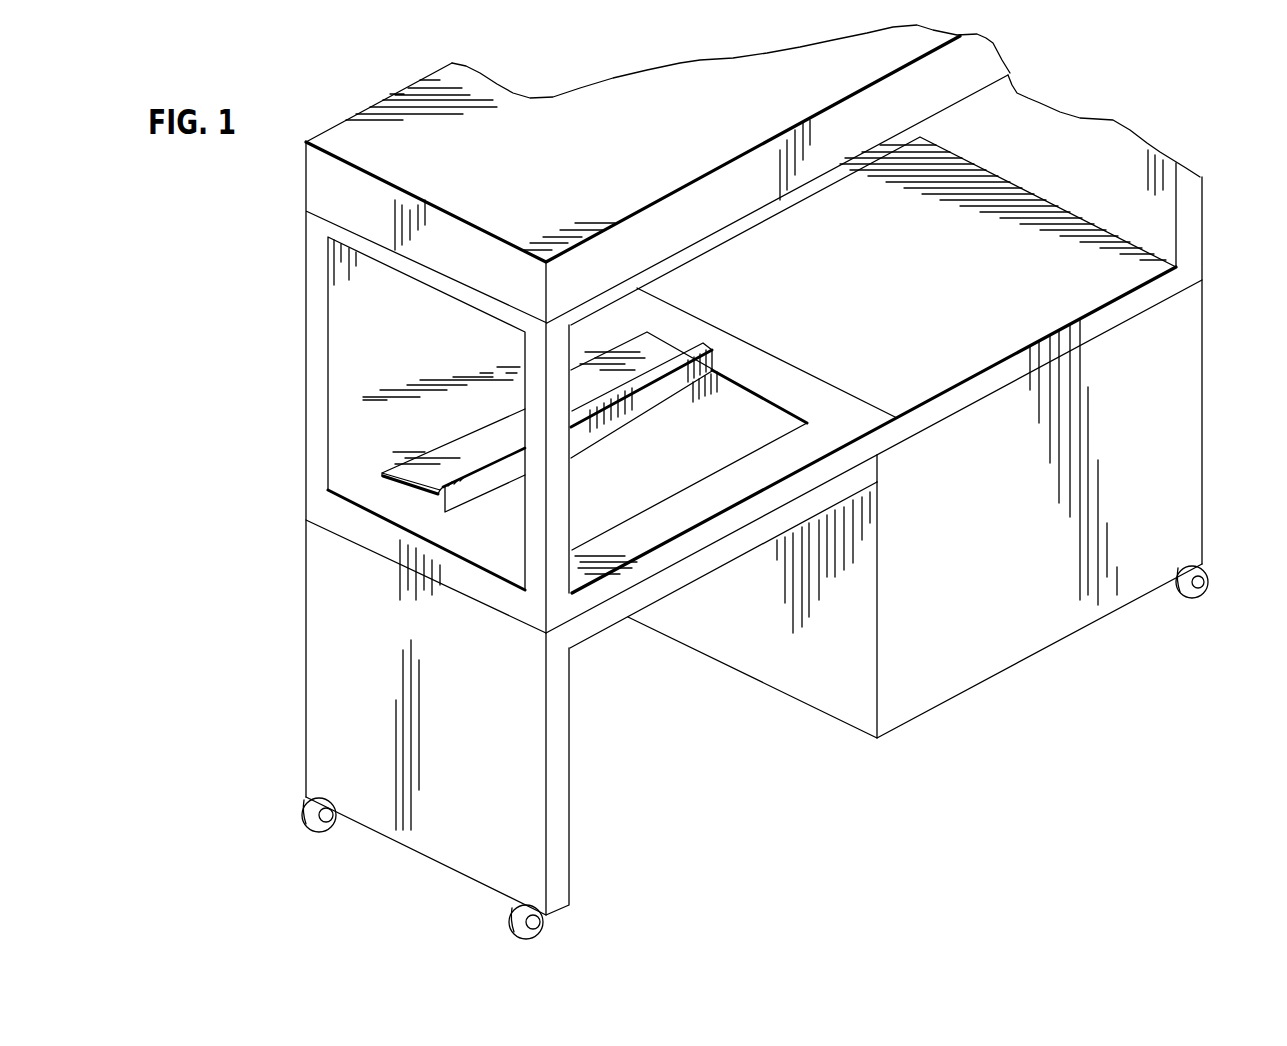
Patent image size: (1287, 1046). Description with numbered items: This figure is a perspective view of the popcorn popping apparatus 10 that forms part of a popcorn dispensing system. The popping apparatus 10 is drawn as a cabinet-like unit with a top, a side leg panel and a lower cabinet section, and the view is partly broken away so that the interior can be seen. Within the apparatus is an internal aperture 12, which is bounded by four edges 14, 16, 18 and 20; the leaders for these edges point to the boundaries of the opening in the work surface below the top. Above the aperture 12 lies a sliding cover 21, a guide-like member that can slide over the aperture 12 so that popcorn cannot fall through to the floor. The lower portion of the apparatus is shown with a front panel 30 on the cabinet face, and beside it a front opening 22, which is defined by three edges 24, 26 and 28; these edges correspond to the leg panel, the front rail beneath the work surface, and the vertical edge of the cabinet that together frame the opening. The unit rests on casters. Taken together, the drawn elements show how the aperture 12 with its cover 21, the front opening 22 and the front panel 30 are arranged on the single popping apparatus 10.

The popcorn popping apparatus 10 is at (268, 218).
The internal aperture 12 is at (744, 410).
The edge 14 is at (713, 427).
The edge 16 is at (593, 437).
The edge 18 is at (485, 527).
The edge 20 is at (758, 445).
The sliding cover 21 is at (467, 453).
The front opening 22 is at (727, 750).
The edge 24 is at (569, 803).
The edge 26 is at (655, 603).
The edge 28 is at (877, 640).
The front panel 30 is at (984, 505).